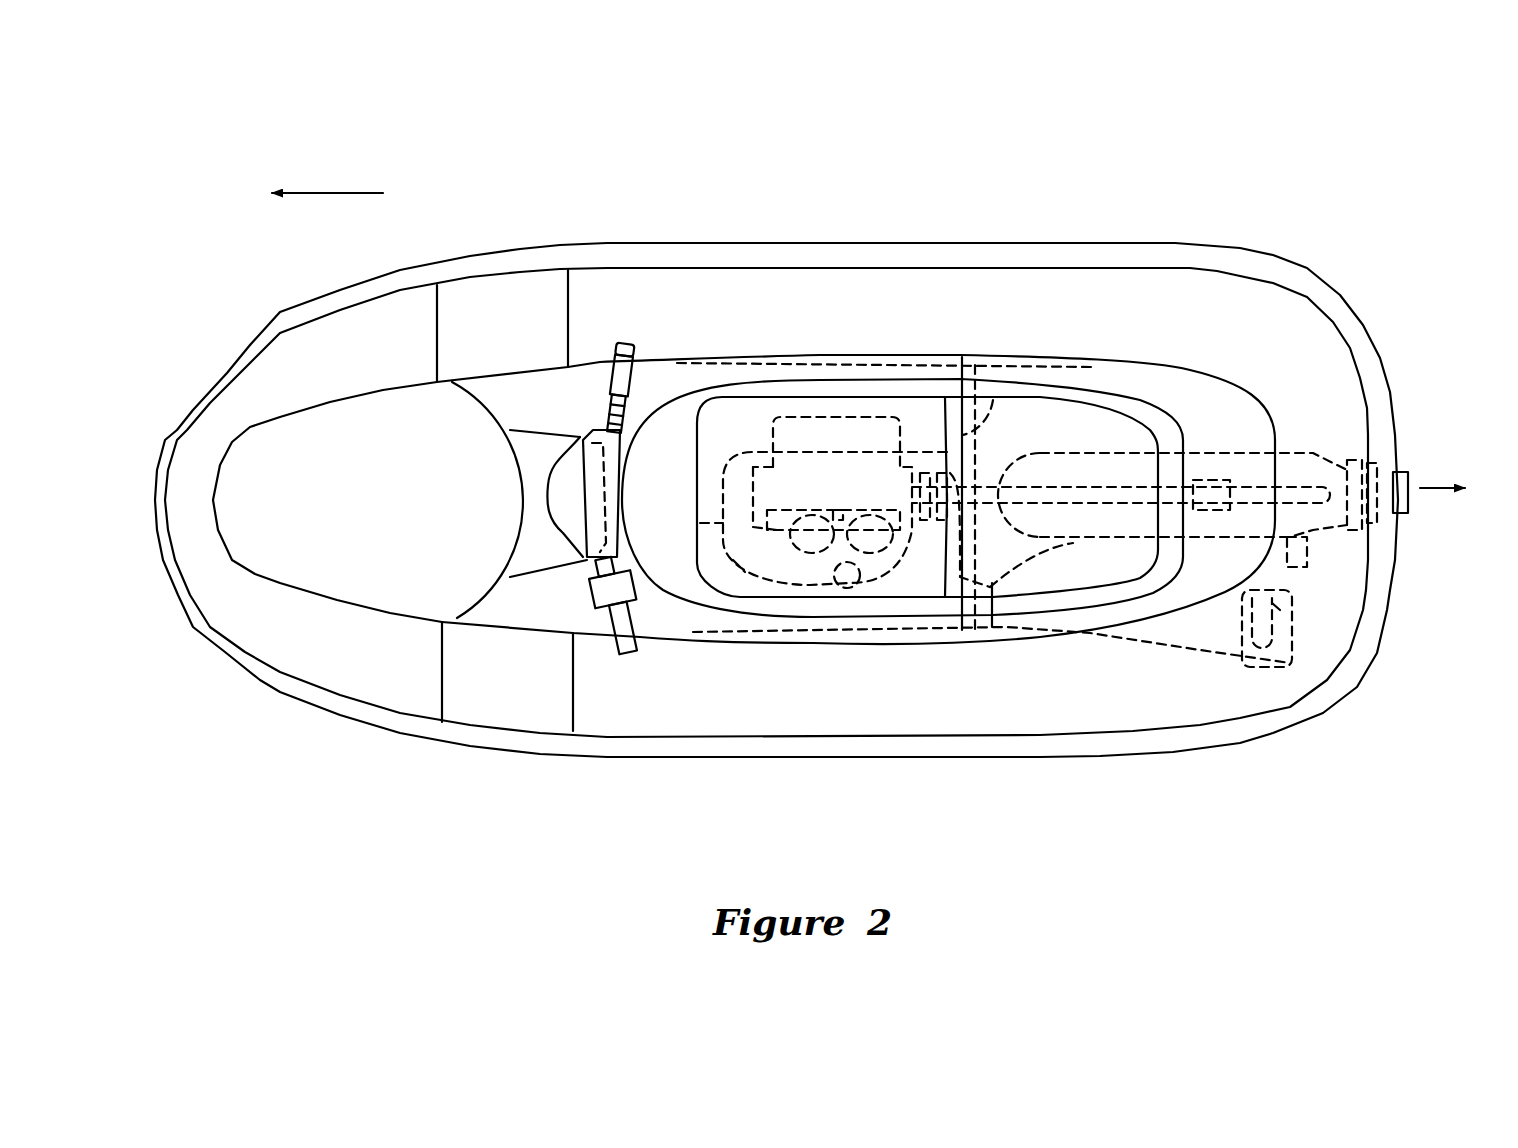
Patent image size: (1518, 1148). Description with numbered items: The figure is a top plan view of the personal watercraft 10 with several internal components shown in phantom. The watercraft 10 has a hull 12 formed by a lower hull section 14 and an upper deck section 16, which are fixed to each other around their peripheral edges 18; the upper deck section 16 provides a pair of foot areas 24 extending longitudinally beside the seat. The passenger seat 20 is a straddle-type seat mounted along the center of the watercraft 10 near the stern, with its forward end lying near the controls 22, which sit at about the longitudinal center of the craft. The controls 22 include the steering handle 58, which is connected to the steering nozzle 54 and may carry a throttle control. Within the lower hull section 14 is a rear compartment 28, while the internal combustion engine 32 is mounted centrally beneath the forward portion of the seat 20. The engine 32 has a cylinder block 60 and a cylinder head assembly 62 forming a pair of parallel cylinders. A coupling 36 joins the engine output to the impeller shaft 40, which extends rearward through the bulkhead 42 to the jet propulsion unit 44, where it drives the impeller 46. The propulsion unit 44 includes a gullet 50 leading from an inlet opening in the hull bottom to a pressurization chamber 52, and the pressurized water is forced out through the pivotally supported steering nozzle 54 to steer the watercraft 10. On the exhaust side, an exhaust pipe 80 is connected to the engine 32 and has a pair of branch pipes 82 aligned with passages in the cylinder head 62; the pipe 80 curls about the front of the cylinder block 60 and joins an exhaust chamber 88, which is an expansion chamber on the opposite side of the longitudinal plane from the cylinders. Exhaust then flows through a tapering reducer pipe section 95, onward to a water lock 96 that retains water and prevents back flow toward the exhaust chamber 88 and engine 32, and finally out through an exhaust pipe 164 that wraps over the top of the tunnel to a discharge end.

The watercraft 10 is at (1243, 183).
The hull 12 is at (1334, 229).
The lower hull section 14 is at (731, 266).
The upper deck section 16 is at (652, 617).
The peripheral edges 18 is at (682, 240).
The passenger seat 20 is at (906, 598).
The controls 22 is at (565, 542).
The foot areas 24 is at (807, 290).
The rear compartment 28 is at (1103, 420).
The internal combustion engine 32 is at (818, 405).
The coupling 36 is at (960, 357).
The impeller shaft 40 is at (1093, 507).
The bulkhead 42 is at (993, 400).
The jet propulsion unit 44 is at (1319, 517).
The impeller 46 is at (1233, 547).
The gullet 50 is at (1205, 447).
The pressurization chamber 52 is at (1217, 477).
The steering nozzle 54 is at (1397, 513).
The steering handle 58 is at (620, 337).
The cylinder block 60 is at (862, 450).
The cylinder head assembly 62 is at (785, 565).
The exhaust pipe 80 is at (847, 595).
The exhaust branch pipes 82 is at (788, 592).
The exhaust chamber 88 is at (900, 440).
The reducer pipe section 95 is at (938, 600).
The water lock 96 is at (1153, 653).
The exhaust pipe 164 is at (1276, 606).